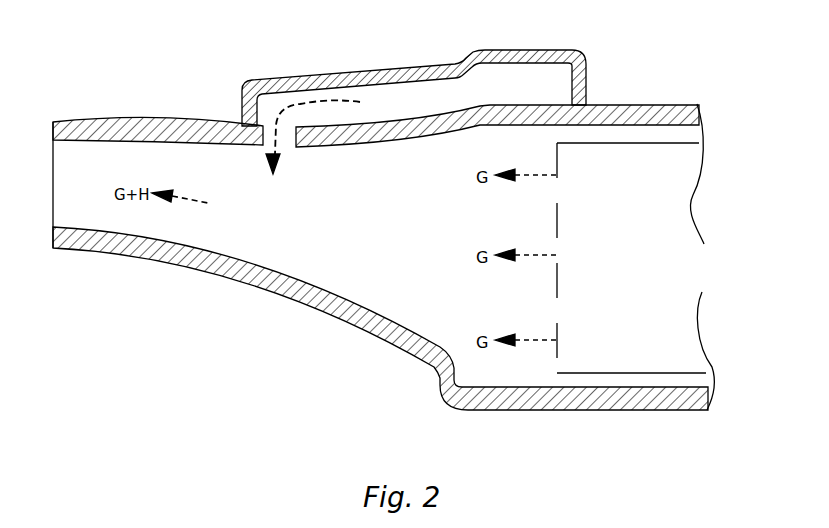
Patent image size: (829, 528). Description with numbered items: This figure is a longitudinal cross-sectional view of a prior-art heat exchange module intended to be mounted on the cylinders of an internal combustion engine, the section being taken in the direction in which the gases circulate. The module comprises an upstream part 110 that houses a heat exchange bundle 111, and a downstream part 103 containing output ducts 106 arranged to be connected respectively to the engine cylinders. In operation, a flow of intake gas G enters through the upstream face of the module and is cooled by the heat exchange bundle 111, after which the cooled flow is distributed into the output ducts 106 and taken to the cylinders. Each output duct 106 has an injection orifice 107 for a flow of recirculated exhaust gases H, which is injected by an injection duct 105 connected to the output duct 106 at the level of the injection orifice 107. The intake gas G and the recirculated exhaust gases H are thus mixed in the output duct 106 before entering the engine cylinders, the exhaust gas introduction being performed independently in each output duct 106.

The downstream part 103 is at (380, 263).
The injection duct 105 is at (388, 67).
The output duct 106 is at (253, 292).
The injection orifice 107 is at (262, 158).
The upstream part 110 is at (594, 81).
The heat exchange bundle 111 is at (666, 219).